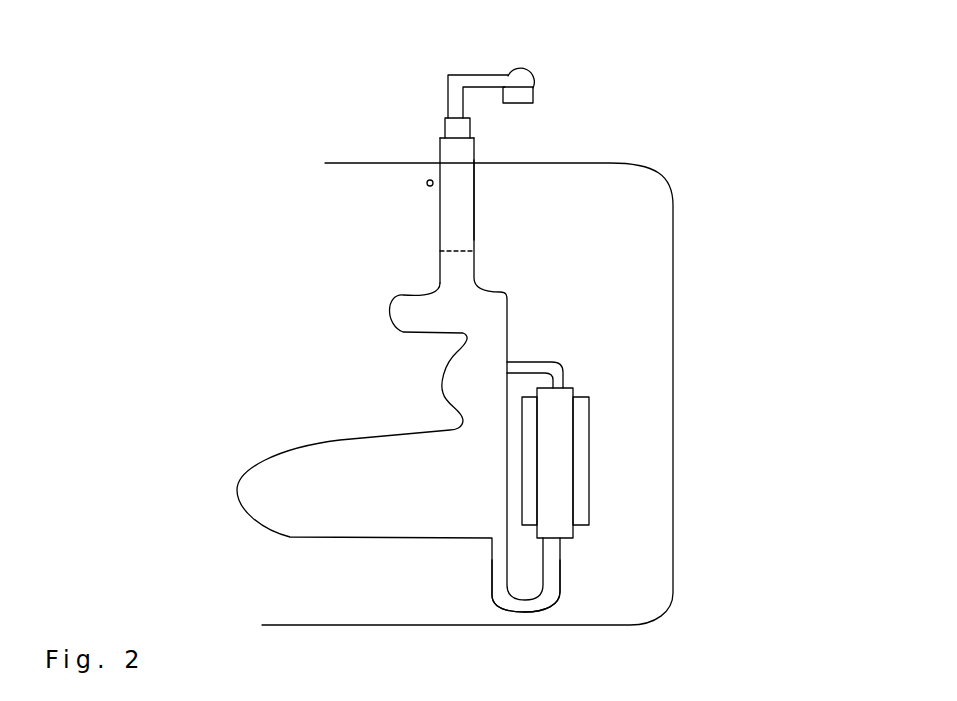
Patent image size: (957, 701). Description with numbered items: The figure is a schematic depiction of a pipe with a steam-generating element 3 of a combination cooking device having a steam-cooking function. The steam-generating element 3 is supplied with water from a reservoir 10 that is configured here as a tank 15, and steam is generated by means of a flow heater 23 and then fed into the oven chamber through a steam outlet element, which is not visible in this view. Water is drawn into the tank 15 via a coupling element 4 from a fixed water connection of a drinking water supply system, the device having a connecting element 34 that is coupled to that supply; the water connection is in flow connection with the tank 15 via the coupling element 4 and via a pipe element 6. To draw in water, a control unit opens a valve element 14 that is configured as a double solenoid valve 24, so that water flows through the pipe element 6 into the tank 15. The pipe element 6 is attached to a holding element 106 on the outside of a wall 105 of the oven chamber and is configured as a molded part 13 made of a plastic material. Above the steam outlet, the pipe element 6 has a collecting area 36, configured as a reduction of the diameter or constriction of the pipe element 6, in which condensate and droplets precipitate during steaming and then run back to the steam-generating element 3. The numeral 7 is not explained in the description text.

The steam-generating element 3 is at (674, 387).
The coupling element 4 is at (392, 369).
The pipe element 6 is at (440, 246).
The cartridge chamber 7 is at (458, 232).
The reservoir 10 is at (322, 447).
The tank 15 is at (297, 507).
The molded part 13 is at (474, 207).
The valve element 14 is at (618, 113).
The double solenoid valve 24 is at (535, 96).
The flow heater 23 is at (558, 513).
The connecting element 34 is at (518, 73).
The collecting area 36 is at (438, 153).
The wall 105 is at (608, 593).
The holding element 106 is at (425, 184).